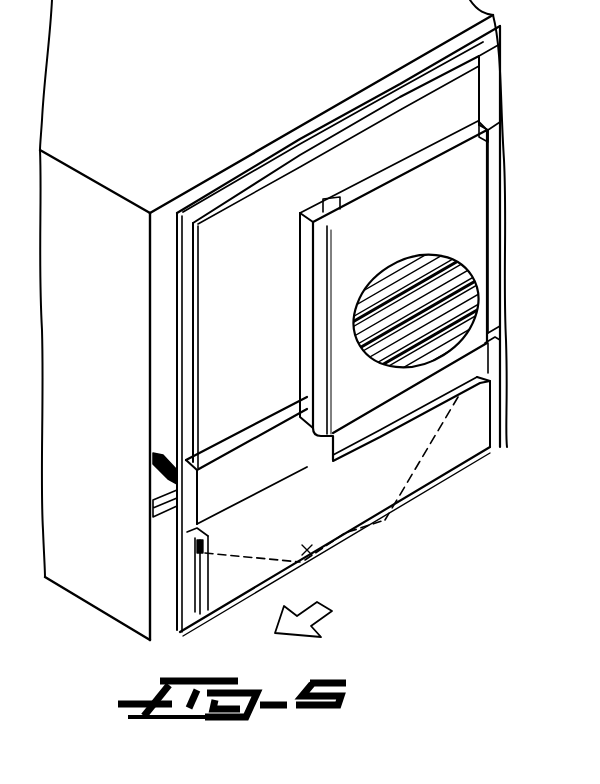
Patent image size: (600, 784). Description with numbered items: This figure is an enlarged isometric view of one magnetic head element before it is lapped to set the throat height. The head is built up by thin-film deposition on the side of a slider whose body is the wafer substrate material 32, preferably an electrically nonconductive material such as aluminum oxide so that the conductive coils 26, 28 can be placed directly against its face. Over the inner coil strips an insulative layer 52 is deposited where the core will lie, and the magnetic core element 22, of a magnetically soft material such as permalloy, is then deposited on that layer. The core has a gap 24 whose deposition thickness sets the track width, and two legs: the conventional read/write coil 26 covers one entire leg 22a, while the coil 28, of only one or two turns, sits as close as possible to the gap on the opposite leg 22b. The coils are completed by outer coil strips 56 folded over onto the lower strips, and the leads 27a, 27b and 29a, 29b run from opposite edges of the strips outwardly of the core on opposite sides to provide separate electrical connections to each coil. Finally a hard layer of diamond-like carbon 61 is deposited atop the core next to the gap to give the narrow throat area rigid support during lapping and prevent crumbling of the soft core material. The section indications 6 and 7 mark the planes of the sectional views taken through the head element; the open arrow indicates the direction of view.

The wafer substrate material 32 is at (216, 35).
The magnetic core element 22 is at (248, 222).
The insulative layer 52 is at (490, 57).
The lead 27b is at (494, 130).
The lead 27a is at (492, 336).
The conductive coil 26 is at (452, 219).
The outer coil strips 56 is at (380, 306).
The leg of the core 22a is at (458, 373).
The conductive coil 28 is at (254, 452).
The diamond-like carbon layer 61 is at (468, 448).
The leg of the core 22b is at (210, 378).
The gap 24 is at (313, 557).
The lead 29b is at (156, 468).
The lead 29a is at (165, 531).
The section line 6- 6 is at (373, 100).
The section line 7- 7 is at (498, 244).